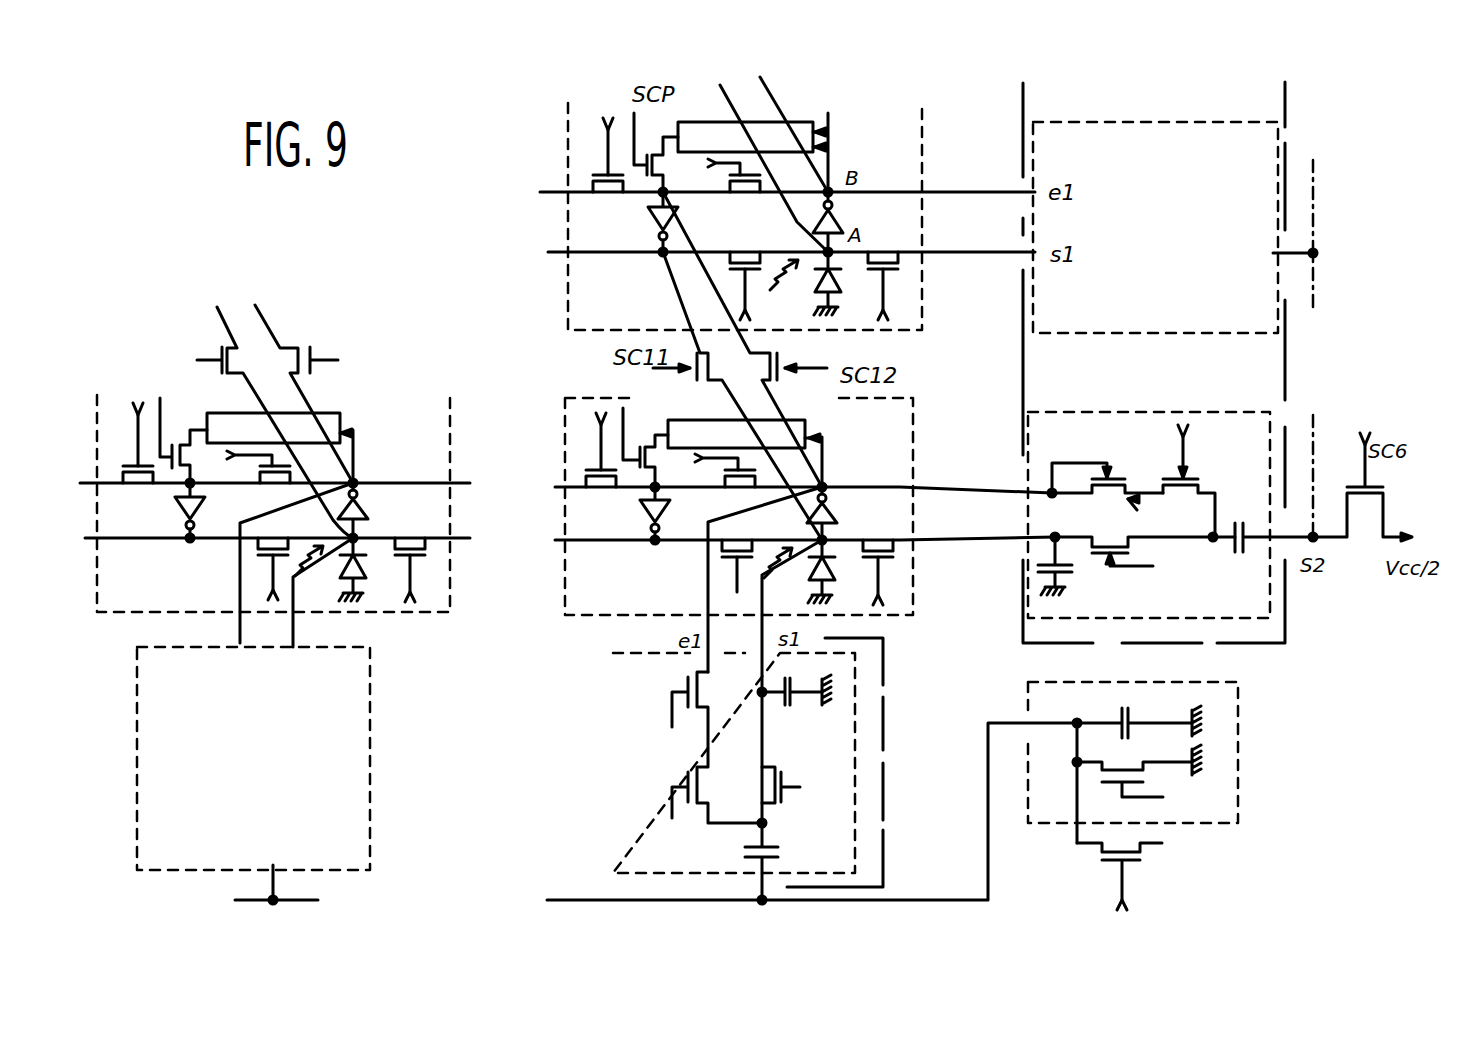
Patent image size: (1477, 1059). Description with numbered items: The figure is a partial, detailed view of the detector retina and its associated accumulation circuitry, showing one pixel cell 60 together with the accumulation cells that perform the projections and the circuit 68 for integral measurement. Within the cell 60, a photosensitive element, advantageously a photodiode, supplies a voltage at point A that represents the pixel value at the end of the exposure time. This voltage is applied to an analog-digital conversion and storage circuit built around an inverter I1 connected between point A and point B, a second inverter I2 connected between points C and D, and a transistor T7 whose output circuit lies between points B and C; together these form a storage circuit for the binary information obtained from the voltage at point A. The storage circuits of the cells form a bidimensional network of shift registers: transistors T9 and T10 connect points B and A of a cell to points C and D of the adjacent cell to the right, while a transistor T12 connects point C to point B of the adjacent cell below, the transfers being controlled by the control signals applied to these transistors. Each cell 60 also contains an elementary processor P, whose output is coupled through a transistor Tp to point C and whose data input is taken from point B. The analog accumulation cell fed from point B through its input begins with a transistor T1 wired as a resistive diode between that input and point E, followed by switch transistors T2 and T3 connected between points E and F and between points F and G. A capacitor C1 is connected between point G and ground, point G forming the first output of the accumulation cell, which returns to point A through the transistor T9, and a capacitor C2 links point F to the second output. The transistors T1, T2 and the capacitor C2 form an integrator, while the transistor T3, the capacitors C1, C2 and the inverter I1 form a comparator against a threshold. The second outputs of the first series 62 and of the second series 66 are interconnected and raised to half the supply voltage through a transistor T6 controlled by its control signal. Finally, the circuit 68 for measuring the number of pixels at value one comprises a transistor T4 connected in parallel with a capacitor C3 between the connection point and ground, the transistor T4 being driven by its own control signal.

The cell 60 is at (779, 498).
The first series of accumulation cells 62 is at (885, 710).
The second series of accumulation cells 66 is at (1285, 625).
The circuit for integral measurement 68 is at (1163, 802).
The transistor T1 is at (1107, 466).
The transistor T2 is at (1200, 481).
The transistor T3 is at (1145, 540).
The transistor T4 is at (1139, 768).
The transistor T6 is at (1365, 487).
The transistor T7 is at (732, 531).
The transistor T9 is at (878, 562).
The transistor T10 is at (591, 466).
The transistor T12 is at (740, 366).
The transistor Tp is at (672, 164).
The elementary processor P is at (745, 137).
The capacitor C1 is at (1071, 566).
The capacitor C2 is at (1265, 551).
The capacitor C3 is at (1139, 713).
The inverter I1 is at (830, 513).
The second inverter I2 is at (639, 513).
The photodiode Io is at (808, 571).